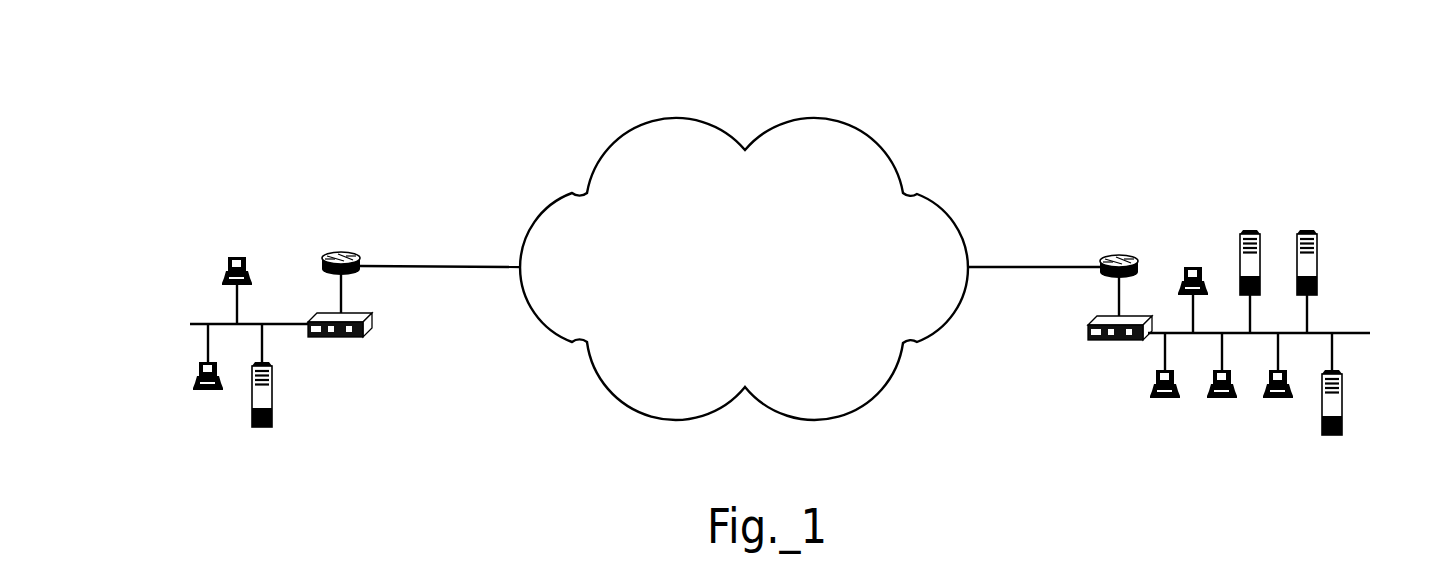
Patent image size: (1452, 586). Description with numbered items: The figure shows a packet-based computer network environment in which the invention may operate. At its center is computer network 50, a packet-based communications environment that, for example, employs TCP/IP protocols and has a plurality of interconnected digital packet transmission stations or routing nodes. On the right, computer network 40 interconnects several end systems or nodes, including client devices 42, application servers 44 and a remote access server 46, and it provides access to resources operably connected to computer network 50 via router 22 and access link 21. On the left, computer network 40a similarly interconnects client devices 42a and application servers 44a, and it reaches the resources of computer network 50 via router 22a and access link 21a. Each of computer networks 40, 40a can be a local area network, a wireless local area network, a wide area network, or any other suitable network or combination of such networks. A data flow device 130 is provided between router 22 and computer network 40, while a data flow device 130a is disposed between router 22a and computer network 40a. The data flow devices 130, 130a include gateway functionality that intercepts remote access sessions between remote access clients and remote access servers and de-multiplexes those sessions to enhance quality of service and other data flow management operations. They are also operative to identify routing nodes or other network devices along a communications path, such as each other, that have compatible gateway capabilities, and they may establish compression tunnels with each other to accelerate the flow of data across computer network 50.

The computer network 50 is at (643, 120).
The access link 21a is at (453, 266).
The access link 21 is at (1037, 267).
The router 22a is at (340, 251).
The router 22 is at (1119, 254).
The data flow device 130a is at (343, 337).
The data flow device 130 is at (1102, 340).
The computer network 40a is at (192, 295).
The computer network 40 is at (1378, 370).
The client devices 42a is at (237, 253).
The client devices 42 is at (1165, 400).
The application servers 44a is at (272, 395).
The application servers 44 is at (1250, 229).
The remote access server 46 is at (1332, 437).